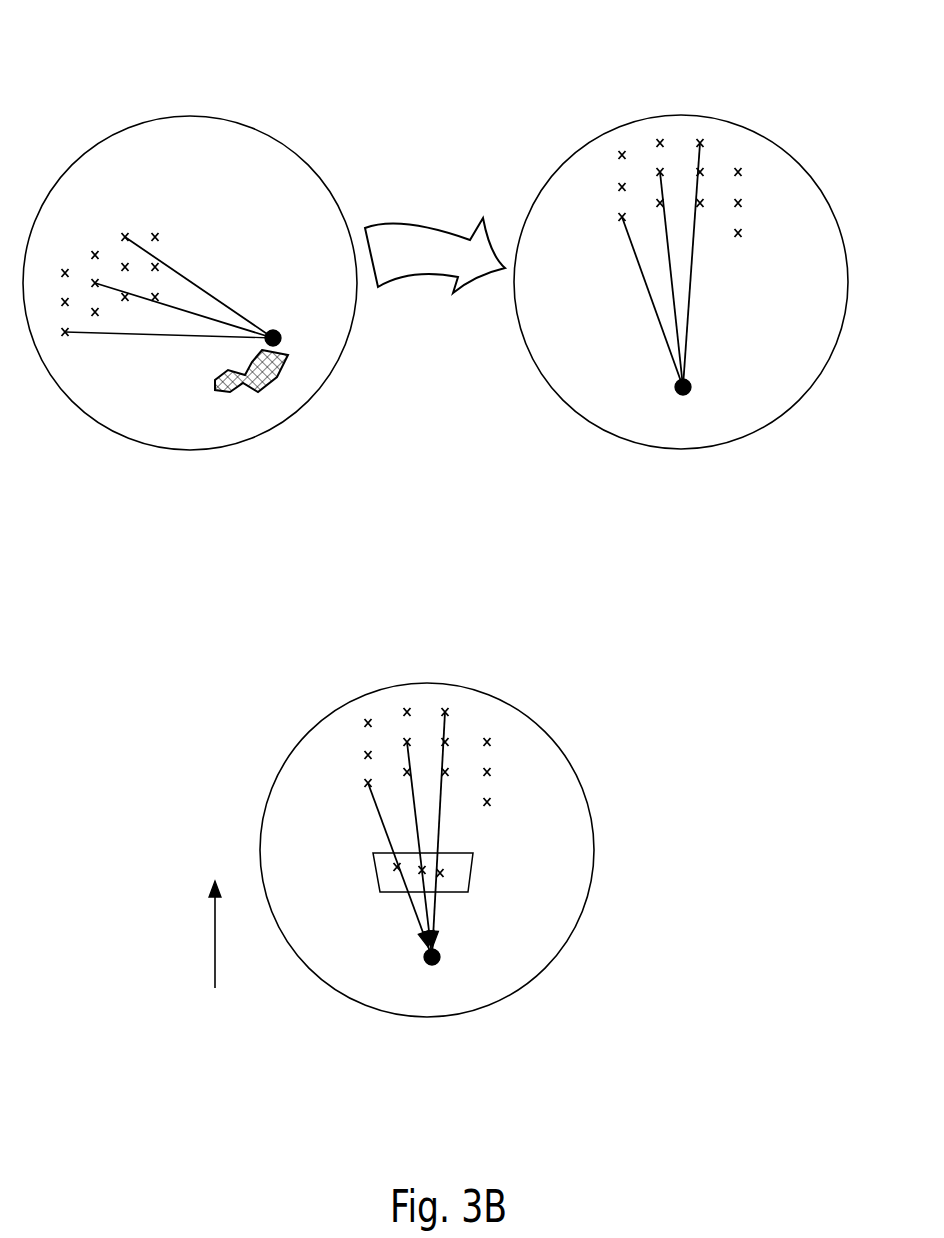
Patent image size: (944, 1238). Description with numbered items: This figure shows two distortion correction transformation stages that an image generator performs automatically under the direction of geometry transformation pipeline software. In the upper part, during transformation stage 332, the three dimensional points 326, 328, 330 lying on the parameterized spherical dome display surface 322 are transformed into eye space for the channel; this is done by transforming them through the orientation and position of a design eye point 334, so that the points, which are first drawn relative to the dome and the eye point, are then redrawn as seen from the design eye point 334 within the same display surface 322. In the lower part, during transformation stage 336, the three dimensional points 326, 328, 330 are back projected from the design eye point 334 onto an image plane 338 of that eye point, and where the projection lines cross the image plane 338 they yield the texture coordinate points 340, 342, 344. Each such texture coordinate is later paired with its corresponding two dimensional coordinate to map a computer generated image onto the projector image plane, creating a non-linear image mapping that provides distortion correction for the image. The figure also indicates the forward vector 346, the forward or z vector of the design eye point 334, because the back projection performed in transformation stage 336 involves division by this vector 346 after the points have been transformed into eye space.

The parameterized spherical dome display surface 322 is at (313, 170).
The three dimensional point 326 is at (65, 332).
The three dimensional point 328 is at (95, 283).
The three dimensional point 330 is at (123, 235).
The transformation stage 332 is at (465, 88).
The design eye point 334 is at (276, 330).
The transformation stage 336 is at (361, 664).
The image plane 338 is at (470, 880).
The texture coordinate point 340 is at (395, 867).
The texture coordinate point 342 is at (422, 873).
The texture coordinate point 344 is at (438, 872).
The forward vector 346 is at (215, 975).